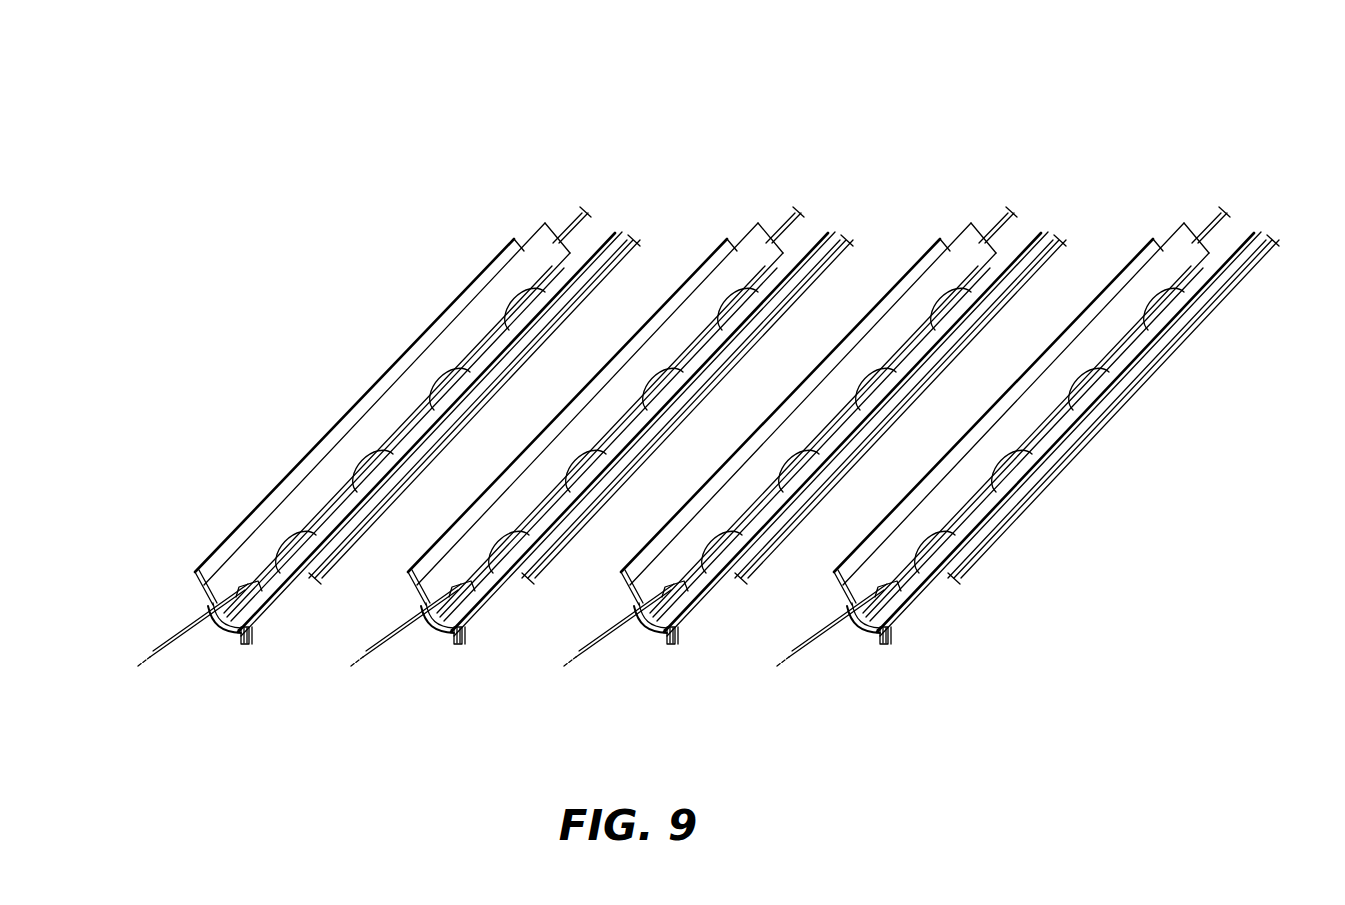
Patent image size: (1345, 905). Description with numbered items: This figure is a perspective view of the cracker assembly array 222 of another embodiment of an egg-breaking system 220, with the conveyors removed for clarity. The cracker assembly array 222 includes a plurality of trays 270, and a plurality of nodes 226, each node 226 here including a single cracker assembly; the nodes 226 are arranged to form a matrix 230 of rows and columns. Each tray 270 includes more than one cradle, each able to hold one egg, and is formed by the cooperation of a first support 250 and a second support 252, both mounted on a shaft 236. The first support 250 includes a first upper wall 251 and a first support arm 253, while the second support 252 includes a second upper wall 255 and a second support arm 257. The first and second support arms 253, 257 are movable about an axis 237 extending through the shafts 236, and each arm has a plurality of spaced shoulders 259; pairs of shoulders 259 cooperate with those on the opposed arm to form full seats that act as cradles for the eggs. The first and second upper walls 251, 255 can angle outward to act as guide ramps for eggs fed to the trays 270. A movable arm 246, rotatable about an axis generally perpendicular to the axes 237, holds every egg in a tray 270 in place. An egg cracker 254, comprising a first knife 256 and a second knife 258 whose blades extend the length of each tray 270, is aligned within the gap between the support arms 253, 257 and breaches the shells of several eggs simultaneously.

The egg-breaking system 220 is at (304, 183).
The cracker assembly array 222 is at (292, 342).
The node 226 is at (674, 397).
The matrix 230 is at (614, 82).
The shaft 236 is at (518, 617).
The axis 237 is at (461, 642).
The movable arm 246 is at (859, 203).
The first support 250 is at (694, 382).
The first upper wall 251 is at (509, 570).
The second support 252 is at (809, 353).
The first support arm 253 is at (507, 650).
The egg cracker 254 is at (541, 691).
The second upper wall 255 is at (622, 622).
The first knife 256 is at (537, 651).
The second support arm 257 is at (592, 671).
The second knife 258 is at (567, 673).
The shoulder 259 is at (513, 682).
The tray 270 is at (749, 393).